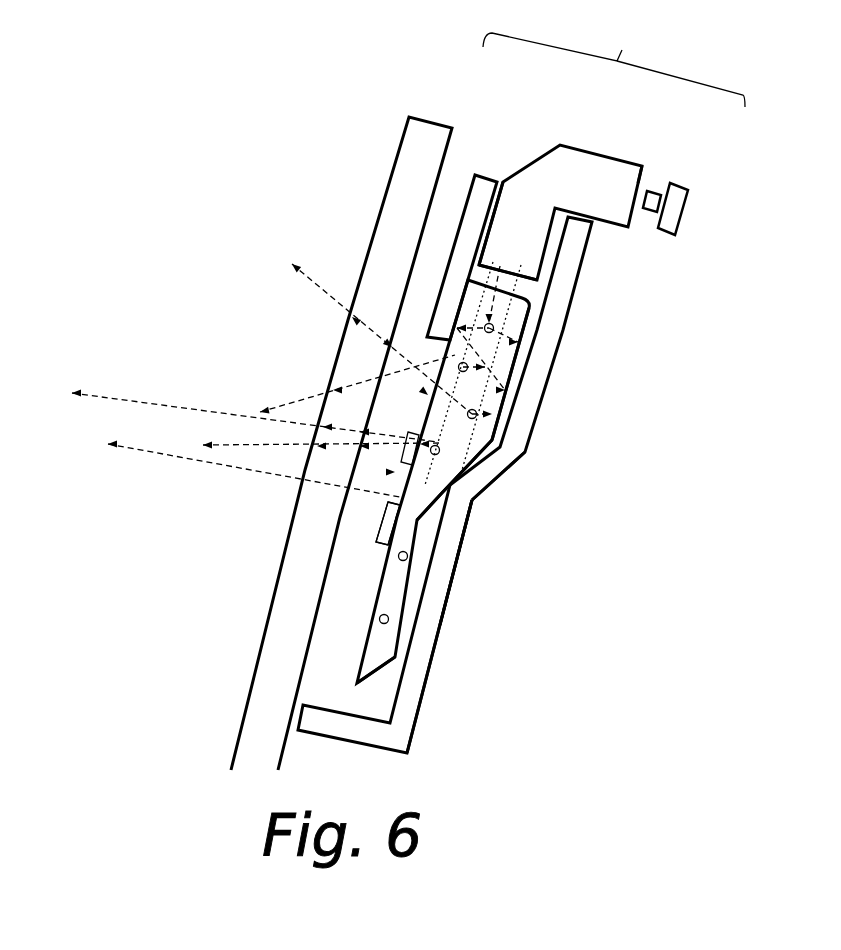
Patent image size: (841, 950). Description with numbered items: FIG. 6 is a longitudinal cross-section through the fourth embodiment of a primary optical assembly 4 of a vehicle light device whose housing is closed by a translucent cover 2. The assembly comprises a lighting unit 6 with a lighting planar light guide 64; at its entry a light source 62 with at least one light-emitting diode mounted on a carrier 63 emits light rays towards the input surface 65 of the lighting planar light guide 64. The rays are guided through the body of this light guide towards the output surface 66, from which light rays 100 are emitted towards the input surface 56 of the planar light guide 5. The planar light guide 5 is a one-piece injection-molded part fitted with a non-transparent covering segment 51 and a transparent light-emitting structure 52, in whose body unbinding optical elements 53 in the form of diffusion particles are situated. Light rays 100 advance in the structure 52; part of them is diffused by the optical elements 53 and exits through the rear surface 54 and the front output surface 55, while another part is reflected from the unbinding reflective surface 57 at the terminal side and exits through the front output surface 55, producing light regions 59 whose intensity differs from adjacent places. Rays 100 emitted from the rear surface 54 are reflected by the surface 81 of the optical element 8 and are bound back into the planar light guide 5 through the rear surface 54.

The translucent cover 2 is at (300, 623).
The primary optical assembly 4 is at (614, 56).
The planar light guide 5 is at (430, 397).
The lighting unit 6 is at (528, 166).
The optical element 8 is at (450, 598).
The non-transparent covering segment 51 is at (455, 275).
The transparent light-emitting structure 52 is at (513, 420).
The unbinding optical elements 53 is at (510, 328).
The rear surface 54 is at (545, 352).
The front output surface 55 is at (395, 500).
The input surface 56 is at (568, 217).
The unbinding reflective surface 57 is at (500, 461).
The light region 59 is at (407, 447).
The light source 62 is at (668, 207).
The carrier 63 is at (668, 203).
The lighting planar light guide 64 is at (500, 217).
The input surface 65 is at (645, 183).
The output surface 66 is at (520, 280).
The reflective surface of the optical element 81 is at (480, 460).
The light rays 100 is at (290, 268).